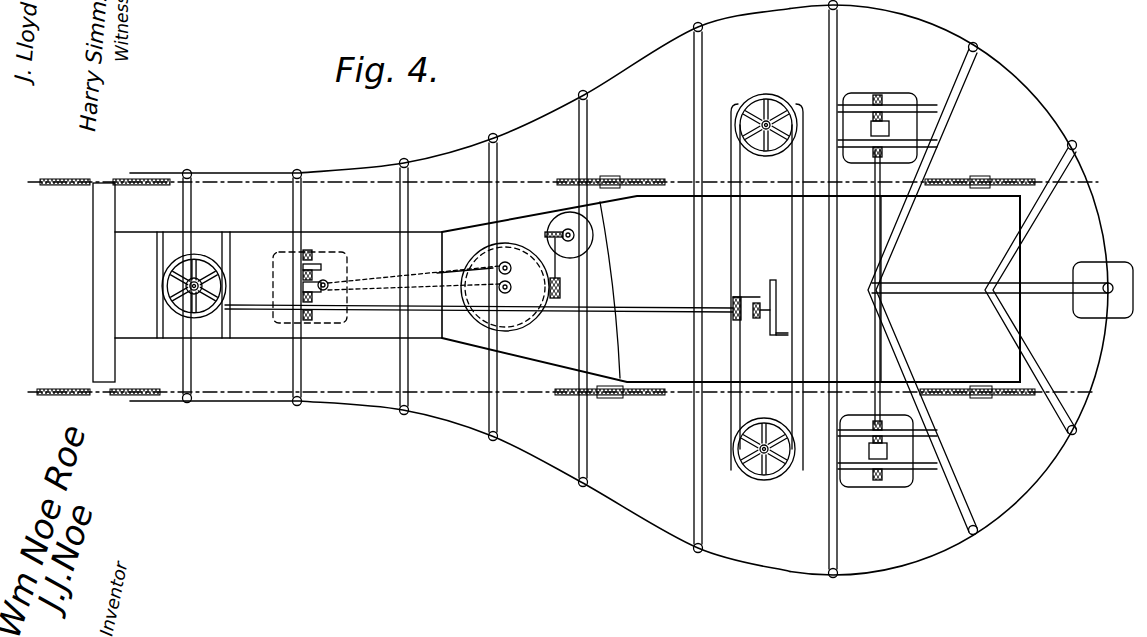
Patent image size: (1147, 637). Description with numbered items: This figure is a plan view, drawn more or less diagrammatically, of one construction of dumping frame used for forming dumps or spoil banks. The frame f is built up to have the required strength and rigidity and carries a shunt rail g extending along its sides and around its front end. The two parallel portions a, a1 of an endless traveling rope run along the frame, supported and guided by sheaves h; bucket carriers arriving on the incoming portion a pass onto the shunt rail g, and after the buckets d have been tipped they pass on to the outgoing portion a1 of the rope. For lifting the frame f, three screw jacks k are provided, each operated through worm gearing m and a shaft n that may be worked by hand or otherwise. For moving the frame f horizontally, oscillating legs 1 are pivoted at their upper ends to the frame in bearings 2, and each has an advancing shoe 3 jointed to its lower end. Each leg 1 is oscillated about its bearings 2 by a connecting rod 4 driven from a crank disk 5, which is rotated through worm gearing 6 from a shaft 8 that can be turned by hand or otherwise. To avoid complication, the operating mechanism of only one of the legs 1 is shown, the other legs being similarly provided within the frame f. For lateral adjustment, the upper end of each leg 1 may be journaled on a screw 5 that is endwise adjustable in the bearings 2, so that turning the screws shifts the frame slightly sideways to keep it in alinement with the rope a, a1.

The oscillating leg 1 is at (322, 280).
The bearings 2 is at (335, 318).
The advancing shoe 3 is at (335, 262).
The connecting rod 4 is at (470, 272).
The crank disk 5 is at (332, 288).
The worm gearing 6 is at (562, 295).
The shaft 8 is at (566, 230).
The incoming portion of endless rope a is at (31, 180).
The outgoing portion of endless rope a1 is at (1080, 398).
The bucket d is at (1080, 266).
The frame f is at (937, 298).
The shunt rail g is at (771, 42).
The sheaves h is at (116, 178).
The screw jack k is at (165, 280).
The worm gearing m is at (200, 305).
The shaft n is at (538, 308).